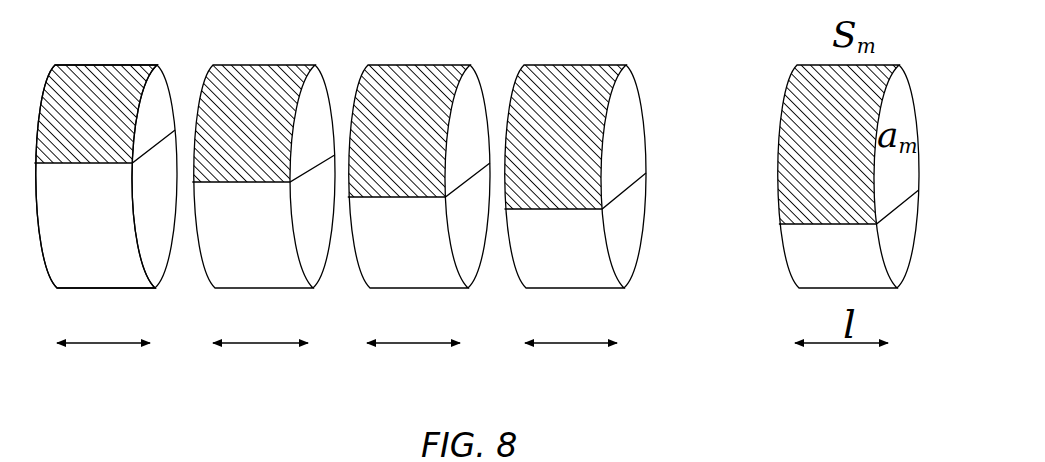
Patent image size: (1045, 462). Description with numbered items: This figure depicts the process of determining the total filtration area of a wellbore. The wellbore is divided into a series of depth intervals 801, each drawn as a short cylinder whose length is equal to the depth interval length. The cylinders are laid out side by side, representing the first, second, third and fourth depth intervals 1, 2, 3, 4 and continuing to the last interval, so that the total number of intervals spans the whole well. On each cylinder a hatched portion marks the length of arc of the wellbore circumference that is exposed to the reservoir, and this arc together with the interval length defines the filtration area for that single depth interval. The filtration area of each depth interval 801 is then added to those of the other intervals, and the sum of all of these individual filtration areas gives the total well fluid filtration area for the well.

The depth interval 801 is at (120, 64).
The first segment S1 1 is at (96, 151).
The second segment S2 2 is at (259, 180).
The third segment S3 3 is at (414, 180).
The fourth segment S4 4 is at (570, 180).